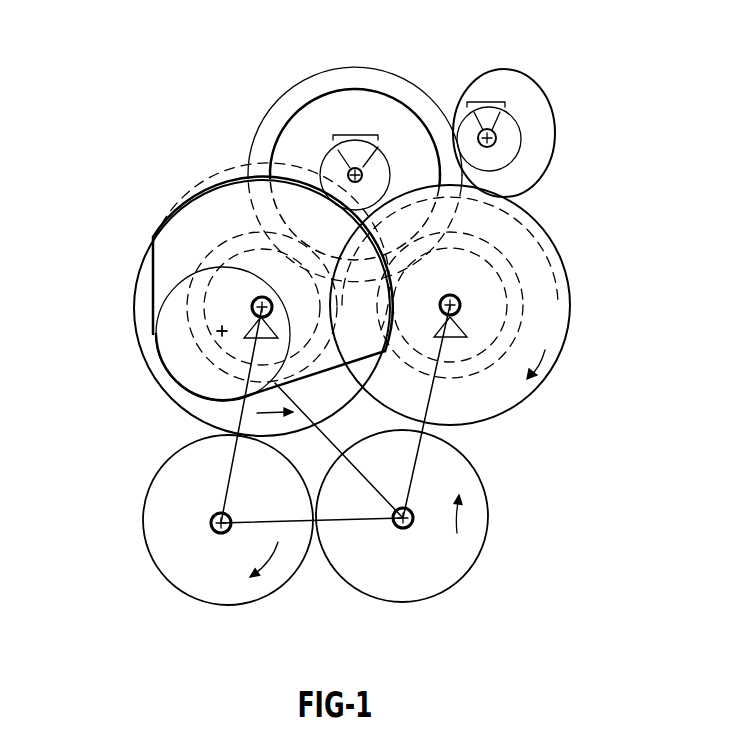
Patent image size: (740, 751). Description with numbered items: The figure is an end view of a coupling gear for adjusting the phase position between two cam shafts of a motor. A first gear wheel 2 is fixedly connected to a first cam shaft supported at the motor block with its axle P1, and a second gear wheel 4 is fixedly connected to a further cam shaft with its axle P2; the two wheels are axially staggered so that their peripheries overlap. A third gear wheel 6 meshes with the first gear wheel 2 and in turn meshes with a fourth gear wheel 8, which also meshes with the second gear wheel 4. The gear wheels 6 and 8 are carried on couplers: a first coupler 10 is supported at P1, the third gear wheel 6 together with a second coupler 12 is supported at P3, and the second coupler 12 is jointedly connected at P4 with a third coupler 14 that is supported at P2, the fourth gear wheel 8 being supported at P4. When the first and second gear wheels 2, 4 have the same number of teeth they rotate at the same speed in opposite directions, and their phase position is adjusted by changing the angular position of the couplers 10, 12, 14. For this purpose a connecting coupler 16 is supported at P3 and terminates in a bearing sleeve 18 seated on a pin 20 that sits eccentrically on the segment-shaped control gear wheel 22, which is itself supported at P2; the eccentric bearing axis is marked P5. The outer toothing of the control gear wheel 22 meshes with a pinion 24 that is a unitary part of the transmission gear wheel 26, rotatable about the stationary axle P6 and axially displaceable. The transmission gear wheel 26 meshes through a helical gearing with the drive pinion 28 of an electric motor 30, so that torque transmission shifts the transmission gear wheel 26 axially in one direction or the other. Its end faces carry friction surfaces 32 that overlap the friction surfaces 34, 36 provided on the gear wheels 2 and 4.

The first gear wheel 2 is at (557, 268).
The second gear wheel 4 is at (187, 403).
The third gear wheel 6 is at (472, 530).
The fourth gear wheel 8 is at (170, 548).
The first coupler 10 is at (437, 398).
The second coupler 12 is at (345, 522).
The third coupler 14 is at (228, 472).
The connecting coupler 16 is at (327, 438).
The bearing sleeve 18 is at (170, 377).
The pin 20 is at (172, 323).
The control gear wheel 22 is at (180, 243).
The pinion 24 is at (337, 165).
The transmission gear wheel 26 is at (355, 103).
The drive pinion 28 is at (510, 140).
The electric motor 30 is at (502, 83).
The friction surfaces 32 is at (293, 100).
The friction surface 34 is at (503, 250).
The friction surface 36 is at (238, 248).
The axle P1 is at (462, 304).
The axle P2 is at (252, 304).
The support point P3 is at (410, 527).
The joint P4 is at (215, 532).
The bearing axis P5 is at (219, 332).
The stationary axle P6 is at (361, 168).